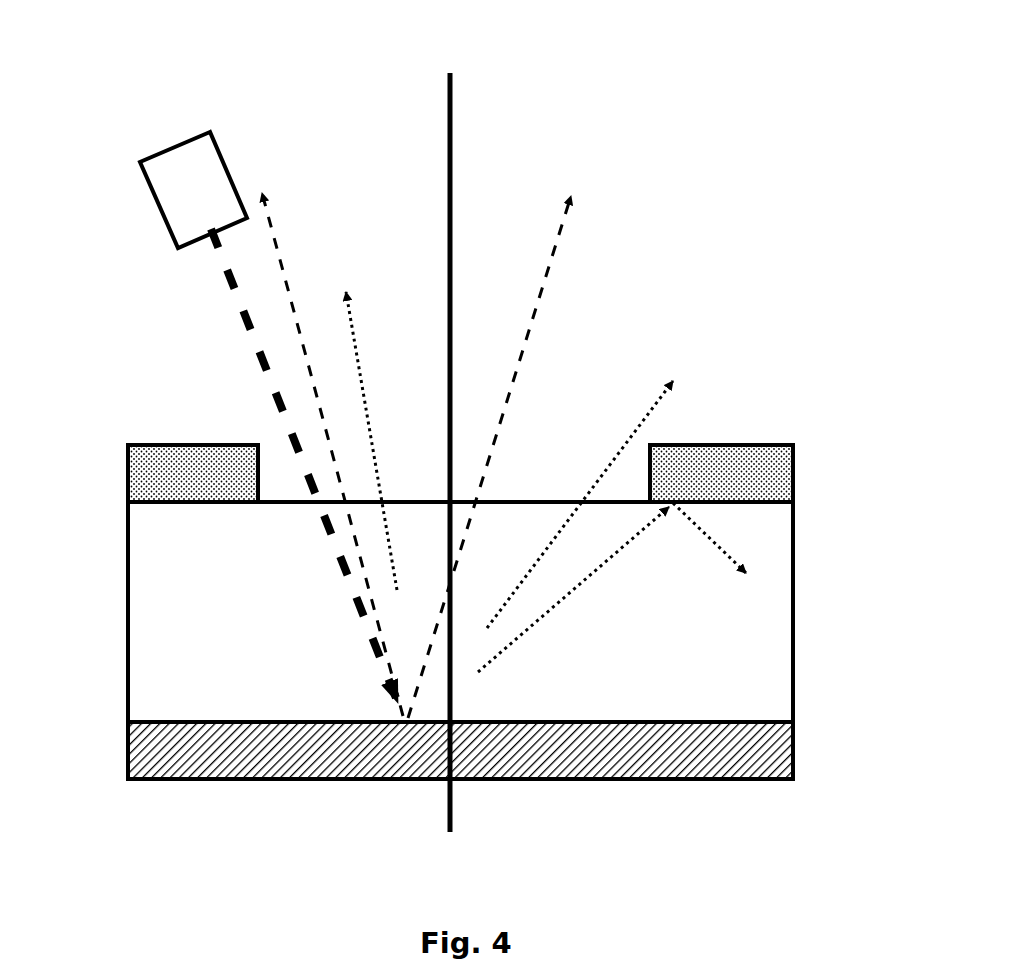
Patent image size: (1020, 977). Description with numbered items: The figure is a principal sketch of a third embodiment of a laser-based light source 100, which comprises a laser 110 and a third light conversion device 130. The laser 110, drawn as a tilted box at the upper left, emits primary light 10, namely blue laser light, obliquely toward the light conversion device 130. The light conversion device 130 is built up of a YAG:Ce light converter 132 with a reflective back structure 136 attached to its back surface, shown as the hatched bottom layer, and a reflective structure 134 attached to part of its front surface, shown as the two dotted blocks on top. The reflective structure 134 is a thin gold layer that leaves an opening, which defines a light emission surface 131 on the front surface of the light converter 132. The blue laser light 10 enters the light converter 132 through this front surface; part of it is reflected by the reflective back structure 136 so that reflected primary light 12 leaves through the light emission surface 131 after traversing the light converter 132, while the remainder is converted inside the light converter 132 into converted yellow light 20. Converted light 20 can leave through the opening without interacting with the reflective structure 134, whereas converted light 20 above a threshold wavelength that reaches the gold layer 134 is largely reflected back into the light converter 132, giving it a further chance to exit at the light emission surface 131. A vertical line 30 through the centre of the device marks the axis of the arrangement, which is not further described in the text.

The laser-based light source 100 is at (158, 99).
The laser 110 is at (158, 209).
The primary light 10 is at (228, 301).
The reflected primary light 12 is at (553, 253).
The converted light 20 is at (360, 372).
The optical axis 30 is at (452, 96).
The third light conversion device 130 is at (111, 452).
The light emission surface 131 is at (538, 501).
The light converter 132 is at (795, 557).
The reflective structure 134 is at (795, 475).
The reflective back structure 136 is at (795, 740).